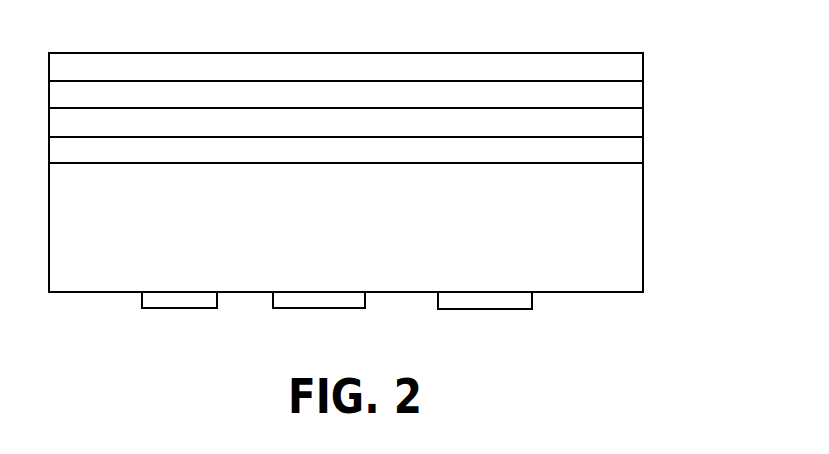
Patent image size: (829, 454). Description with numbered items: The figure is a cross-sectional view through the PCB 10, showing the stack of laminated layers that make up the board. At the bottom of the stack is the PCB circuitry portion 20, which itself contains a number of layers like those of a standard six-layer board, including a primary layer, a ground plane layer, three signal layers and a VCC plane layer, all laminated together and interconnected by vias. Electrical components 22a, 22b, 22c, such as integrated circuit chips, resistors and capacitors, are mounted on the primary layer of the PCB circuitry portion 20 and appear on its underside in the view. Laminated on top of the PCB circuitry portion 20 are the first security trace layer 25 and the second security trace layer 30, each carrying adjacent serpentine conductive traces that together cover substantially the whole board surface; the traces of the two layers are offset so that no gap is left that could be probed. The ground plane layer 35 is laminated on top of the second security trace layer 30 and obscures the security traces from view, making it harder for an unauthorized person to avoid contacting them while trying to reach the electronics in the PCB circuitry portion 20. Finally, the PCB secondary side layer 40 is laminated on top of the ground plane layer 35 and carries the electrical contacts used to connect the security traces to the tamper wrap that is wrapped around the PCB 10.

The PCB 10 is at (458, 41).
The PCB circuitry portion 20 is at (629, 228).
The electrical component 22a is at (188, 310).
The electrical component 22b is at (330, 310).
The electrical component 22c is at (497, 310).
The first security trace layer 25 is at (625, 152).
The second security trace layer 30 is at (625, 122).
The ground plane layer 35 is at (628, 97).
The PCB secondary side layer 40 is at (623, 72).